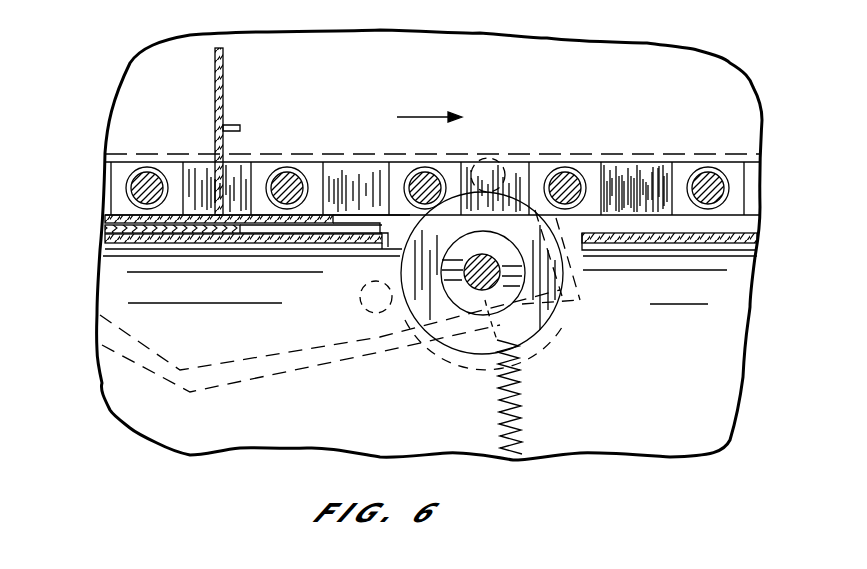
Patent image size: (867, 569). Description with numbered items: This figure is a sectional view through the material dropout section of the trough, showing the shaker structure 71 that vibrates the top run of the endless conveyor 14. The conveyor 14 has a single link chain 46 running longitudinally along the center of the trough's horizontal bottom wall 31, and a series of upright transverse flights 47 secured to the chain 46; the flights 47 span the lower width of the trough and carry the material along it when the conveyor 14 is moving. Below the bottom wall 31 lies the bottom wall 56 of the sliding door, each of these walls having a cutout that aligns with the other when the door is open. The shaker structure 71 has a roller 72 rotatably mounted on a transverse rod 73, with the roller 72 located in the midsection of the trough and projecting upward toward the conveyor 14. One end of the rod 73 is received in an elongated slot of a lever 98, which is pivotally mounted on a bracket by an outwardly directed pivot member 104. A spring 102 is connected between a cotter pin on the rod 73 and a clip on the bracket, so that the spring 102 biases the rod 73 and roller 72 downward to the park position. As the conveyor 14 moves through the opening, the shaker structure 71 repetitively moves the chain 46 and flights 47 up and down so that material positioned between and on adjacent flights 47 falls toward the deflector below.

The endless conveyor 14 is at (778, 165).
The bottom wall 31 is at (108, 222).
The link chain 46 is at (648, 172).
The upright transverse flights 47 is at (223, 83).
The bottom wall of door 56 is at (113, 237).
The shaker structure 71 is at (490, 142).
The roller 72 is at (513, 197).
The transverse rod 73 is at (477, 292).
The lever 98 is at (222, 363).
The spring 102 is at (518, 403).
The pivot member 104 is at (372, 338).